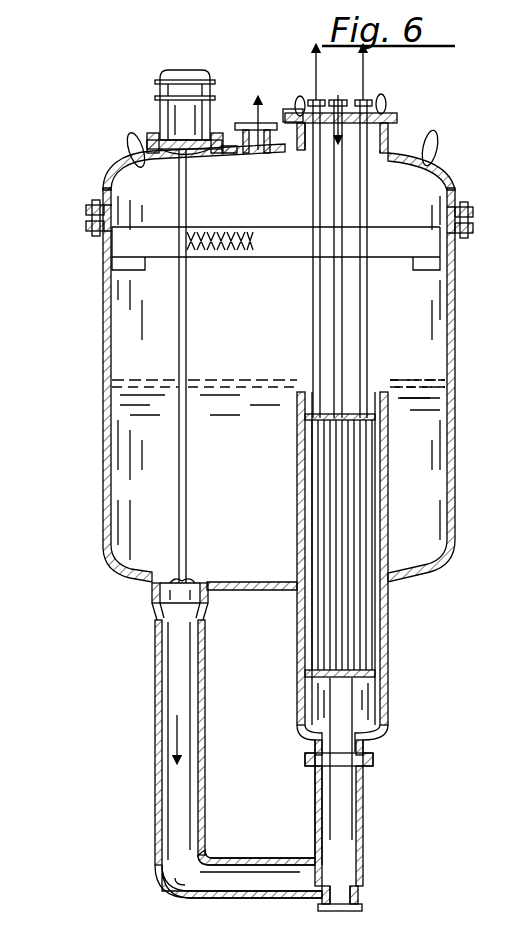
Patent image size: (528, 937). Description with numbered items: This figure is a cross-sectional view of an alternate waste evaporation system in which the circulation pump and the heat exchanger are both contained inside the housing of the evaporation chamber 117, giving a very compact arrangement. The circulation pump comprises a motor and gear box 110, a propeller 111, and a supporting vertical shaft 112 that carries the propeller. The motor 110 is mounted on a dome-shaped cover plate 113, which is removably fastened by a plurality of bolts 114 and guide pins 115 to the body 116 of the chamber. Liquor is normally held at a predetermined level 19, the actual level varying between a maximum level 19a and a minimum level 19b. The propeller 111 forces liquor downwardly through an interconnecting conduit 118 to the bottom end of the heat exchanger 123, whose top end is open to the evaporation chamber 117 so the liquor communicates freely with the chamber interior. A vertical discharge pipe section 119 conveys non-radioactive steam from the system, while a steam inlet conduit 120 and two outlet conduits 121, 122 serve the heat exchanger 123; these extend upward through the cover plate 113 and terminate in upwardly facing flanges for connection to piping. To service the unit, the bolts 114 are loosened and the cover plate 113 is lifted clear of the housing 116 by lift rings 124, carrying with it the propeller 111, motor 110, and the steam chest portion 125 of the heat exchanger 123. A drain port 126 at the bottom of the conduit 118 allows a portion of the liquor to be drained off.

The motor 110 is at (193, 72).
The propeller 111 is at (195, 582).
The supporting vertical shaft 112 is at (178, 347).
The dome-shaped cover plate 113 is at (412, 178).
The bolts 114 is at (93, 206).
The guide pins 115 is at (466, 208).
The body 116 is at (452, 400).
The evaporation chamber 117 is at (258, 362).
The interconnecting conduit 118 is at (172, 680).
The vertical discharge pipe section 119 is at (263, 124).
The steam inlet conduit 120 is at (345, 284).
The outlet conduit 121 is at (313, 308).
The outlet conduit 122 is at (366, 324).
The heat exchanger 123 is at (393, 628).
The lift rings 124 is at (128, 136).
The steam chest portion 125 is at (355, 466).
The drain port 126 is at (355, 900).
The predetermined level 19 is at (425, 380).
The maximum level 19a is at (378, 380).
The minimum level 19b is at (412, 388).